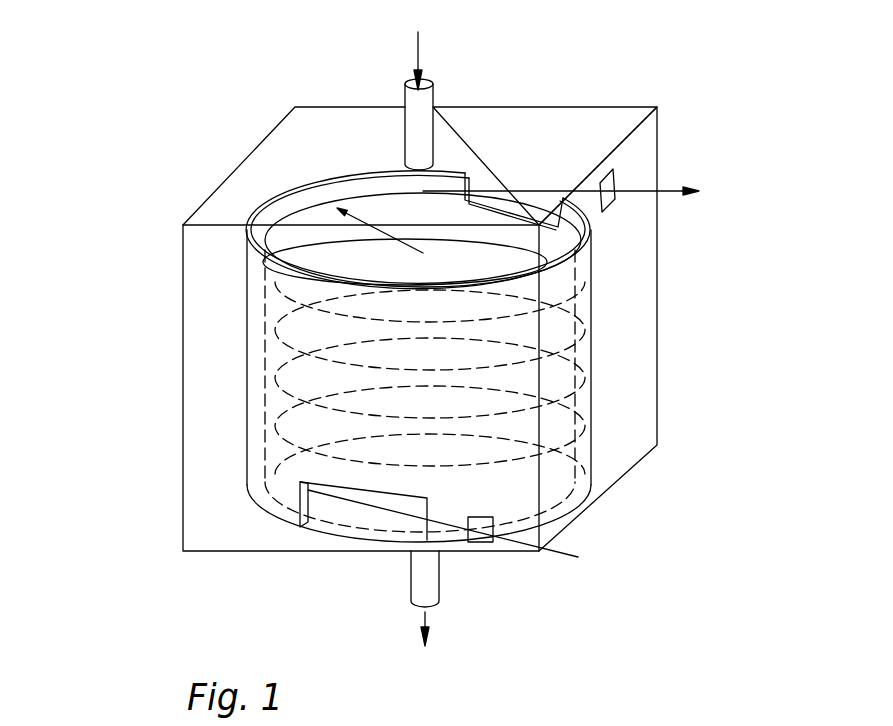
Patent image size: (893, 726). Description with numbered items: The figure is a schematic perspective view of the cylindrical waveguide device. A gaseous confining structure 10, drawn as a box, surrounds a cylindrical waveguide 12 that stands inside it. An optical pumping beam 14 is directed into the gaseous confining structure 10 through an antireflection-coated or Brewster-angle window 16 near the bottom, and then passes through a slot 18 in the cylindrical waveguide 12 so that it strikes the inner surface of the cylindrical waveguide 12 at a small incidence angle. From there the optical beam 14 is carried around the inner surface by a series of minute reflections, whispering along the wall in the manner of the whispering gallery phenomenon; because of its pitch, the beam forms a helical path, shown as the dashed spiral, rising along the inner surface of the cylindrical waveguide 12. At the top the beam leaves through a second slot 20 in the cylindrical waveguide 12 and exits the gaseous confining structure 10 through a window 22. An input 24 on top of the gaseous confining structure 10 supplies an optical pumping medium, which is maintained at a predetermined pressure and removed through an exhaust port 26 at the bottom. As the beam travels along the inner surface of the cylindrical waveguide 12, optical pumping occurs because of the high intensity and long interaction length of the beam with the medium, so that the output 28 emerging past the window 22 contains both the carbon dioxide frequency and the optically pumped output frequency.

The gaseous confining structure 10 is at (658, 344).
The cylindrical waveguide 12 is at (248, 343).
The optical pumping beam 14 is at (560, 552).
The window 16 is at (473, 540).
The slot 18 is at (300, 512).
The slot 20 is at (513, 200).
The window 22 is at (613, 168).
The input 24 is at (408, 102).
The exhaust port 26 is at (418, 568).
The output 28 is at (702, 194).